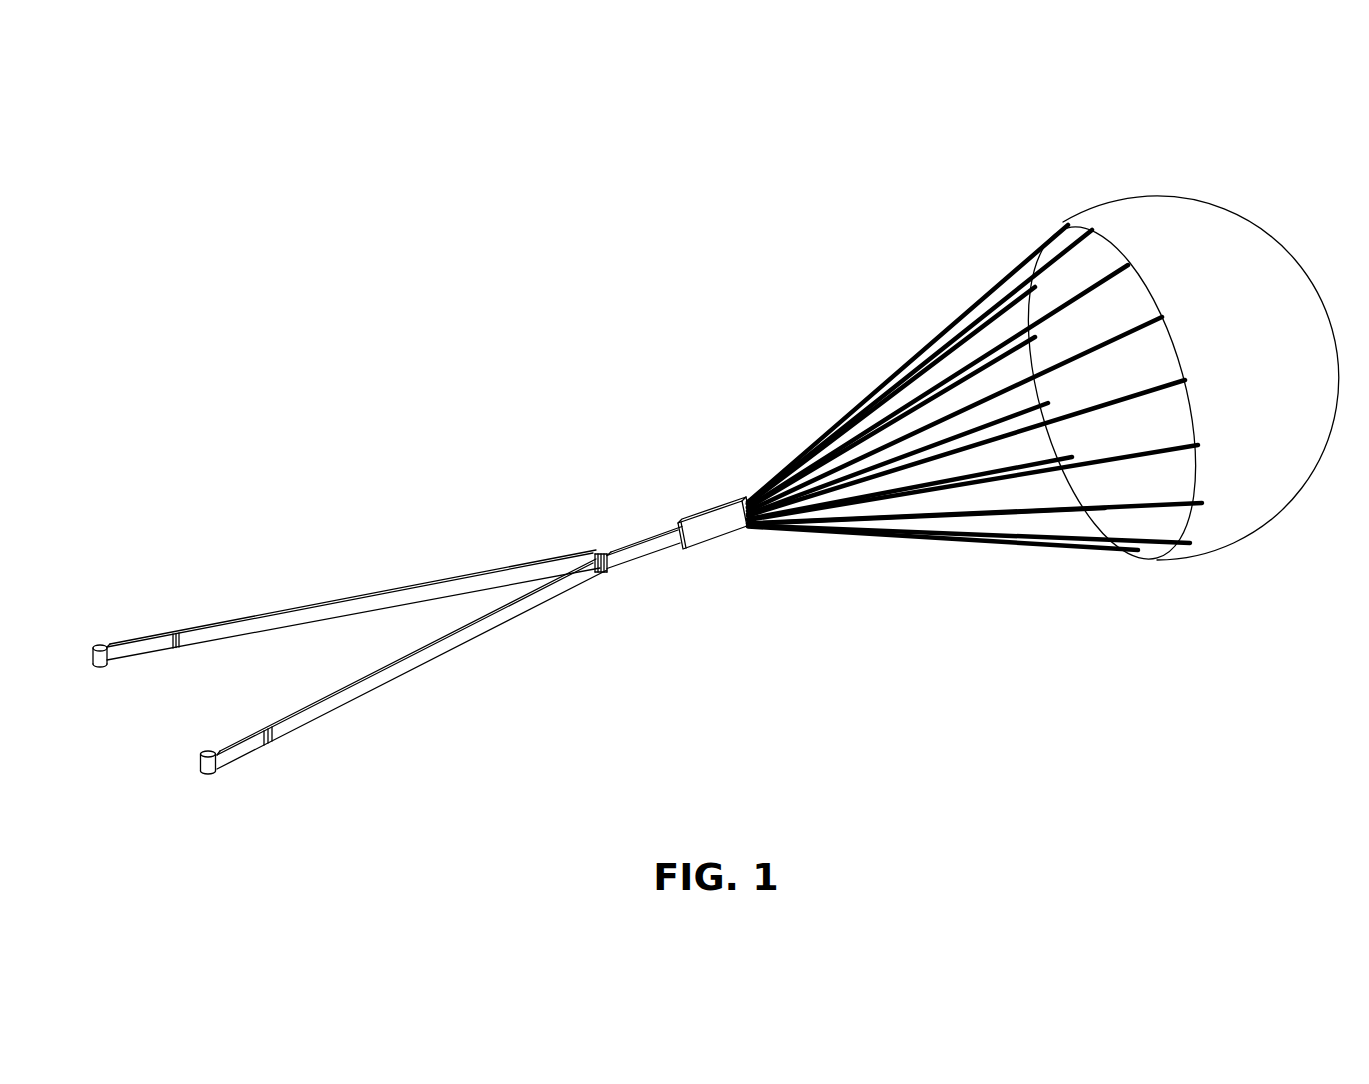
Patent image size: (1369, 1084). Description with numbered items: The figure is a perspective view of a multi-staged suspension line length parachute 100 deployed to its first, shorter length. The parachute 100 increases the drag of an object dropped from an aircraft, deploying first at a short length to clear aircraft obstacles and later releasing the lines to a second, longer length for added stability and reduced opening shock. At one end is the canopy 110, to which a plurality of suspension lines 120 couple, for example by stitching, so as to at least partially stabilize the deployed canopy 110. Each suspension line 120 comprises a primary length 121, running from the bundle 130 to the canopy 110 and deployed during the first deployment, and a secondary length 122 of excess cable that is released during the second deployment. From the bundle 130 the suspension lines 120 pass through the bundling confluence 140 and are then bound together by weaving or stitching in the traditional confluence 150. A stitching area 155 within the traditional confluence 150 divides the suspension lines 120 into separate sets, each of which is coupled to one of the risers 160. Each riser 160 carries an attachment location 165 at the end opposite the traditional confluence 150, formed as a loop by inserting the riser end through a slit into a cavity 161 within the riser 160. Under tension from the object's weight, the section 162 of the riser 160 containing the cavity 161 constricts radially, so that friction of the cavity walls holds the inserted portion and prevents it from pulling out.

The multi-staged suspension line length parachute 100 is at (342, 403).
The canopy 110 is at (1113, 217).
The suspension line 120 is at (975, 387).
The primary length 121 is at (882, 385).
The secondary length 122 is at (947, 330).
The bundle 130 is at (746, 501).
The bundling confluence 140 is at (706, 533).
The traditional confluence 150 is at (620, 557).
The stitching area 155 is at (595, 553).
The risers 160 is at (357, 647).
The cavity 161 is at (105, 667).
The section 162 is at (150, 649).
The attachment location 165 is at (179, 698).